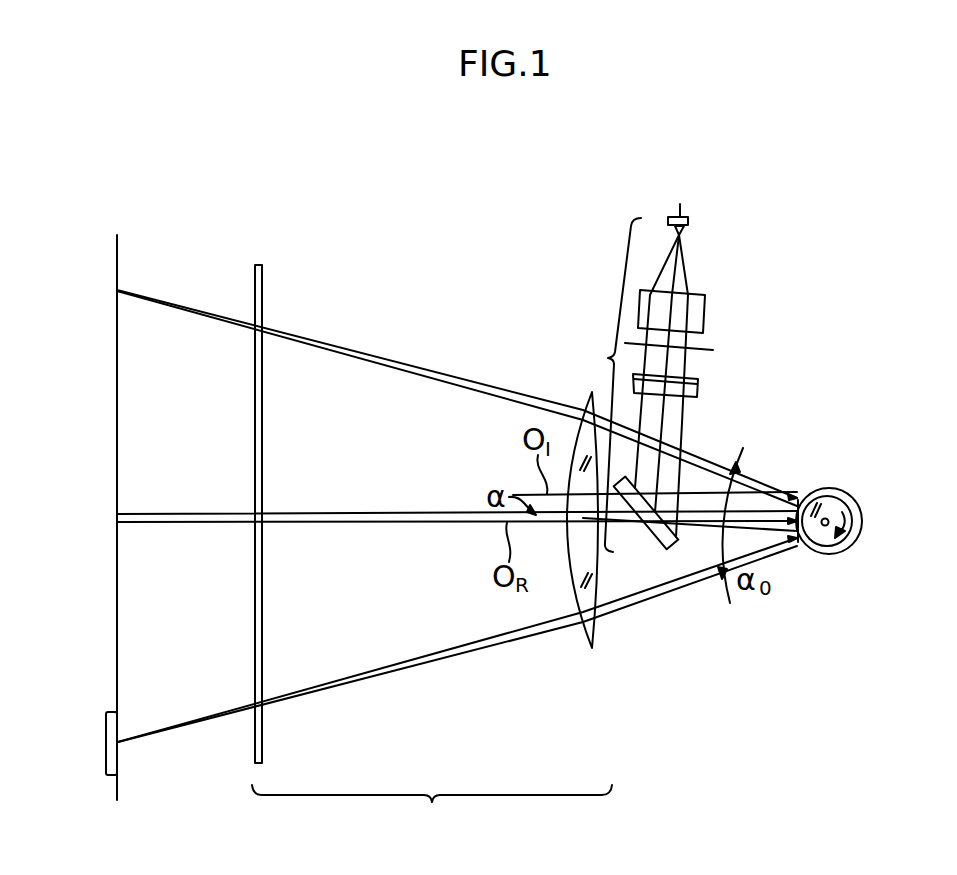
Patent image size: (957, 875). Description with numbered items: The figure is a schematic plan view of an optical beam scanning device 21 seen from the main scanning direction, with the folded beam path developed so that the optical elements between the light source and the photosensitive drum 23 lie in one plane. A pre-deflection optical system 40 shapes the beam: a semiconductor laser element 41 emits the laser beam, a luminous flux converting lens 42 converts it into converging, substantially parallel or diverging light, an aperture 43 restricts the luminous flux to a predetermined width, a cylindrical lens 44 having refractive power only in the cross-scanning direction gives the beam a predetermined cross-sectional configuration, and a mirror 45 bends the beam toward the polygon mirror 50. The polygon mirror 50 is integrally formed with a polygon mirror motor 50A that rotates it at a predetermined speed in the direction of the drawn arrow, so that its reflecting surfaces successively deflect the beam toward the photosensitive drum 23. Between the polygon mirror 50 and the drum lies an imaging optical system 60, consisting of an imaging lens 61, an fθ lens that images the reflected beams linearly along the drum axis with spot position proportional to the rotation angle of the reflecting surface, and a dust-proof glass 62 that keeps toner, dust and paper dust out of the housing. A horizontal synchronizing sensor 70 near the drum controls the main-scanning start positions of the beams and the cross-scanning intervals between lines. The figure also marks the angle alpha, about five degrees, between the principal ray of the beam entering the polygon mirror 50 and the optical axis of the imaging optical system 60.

The optical beam scanning device 21 is at (433, 284).
The photosensitive drum 23 is at (118, 786).
The pre-deflection optical system 40 is at (629, 385).
The semiconductor laser element 41 is at (690, 222).
The luminous flux converting lens 42 is at (706, 314).
The aperture 43 is at (714, 349).
The cylindrical lens 44 is at (699, 387).
The mirror 45 is at (657, 552).
The polygon mirror 50 is at (817, 557).
The polygon mirror motor 50A is at (848, 490).
The imaging optical system 60 is at (432, 812).
The imaging lens 61 is at (592, 650).
The dust-proof glass 62 is at (263, 758).
The horizontal synchronizing sensor 70 is at (106, 740).